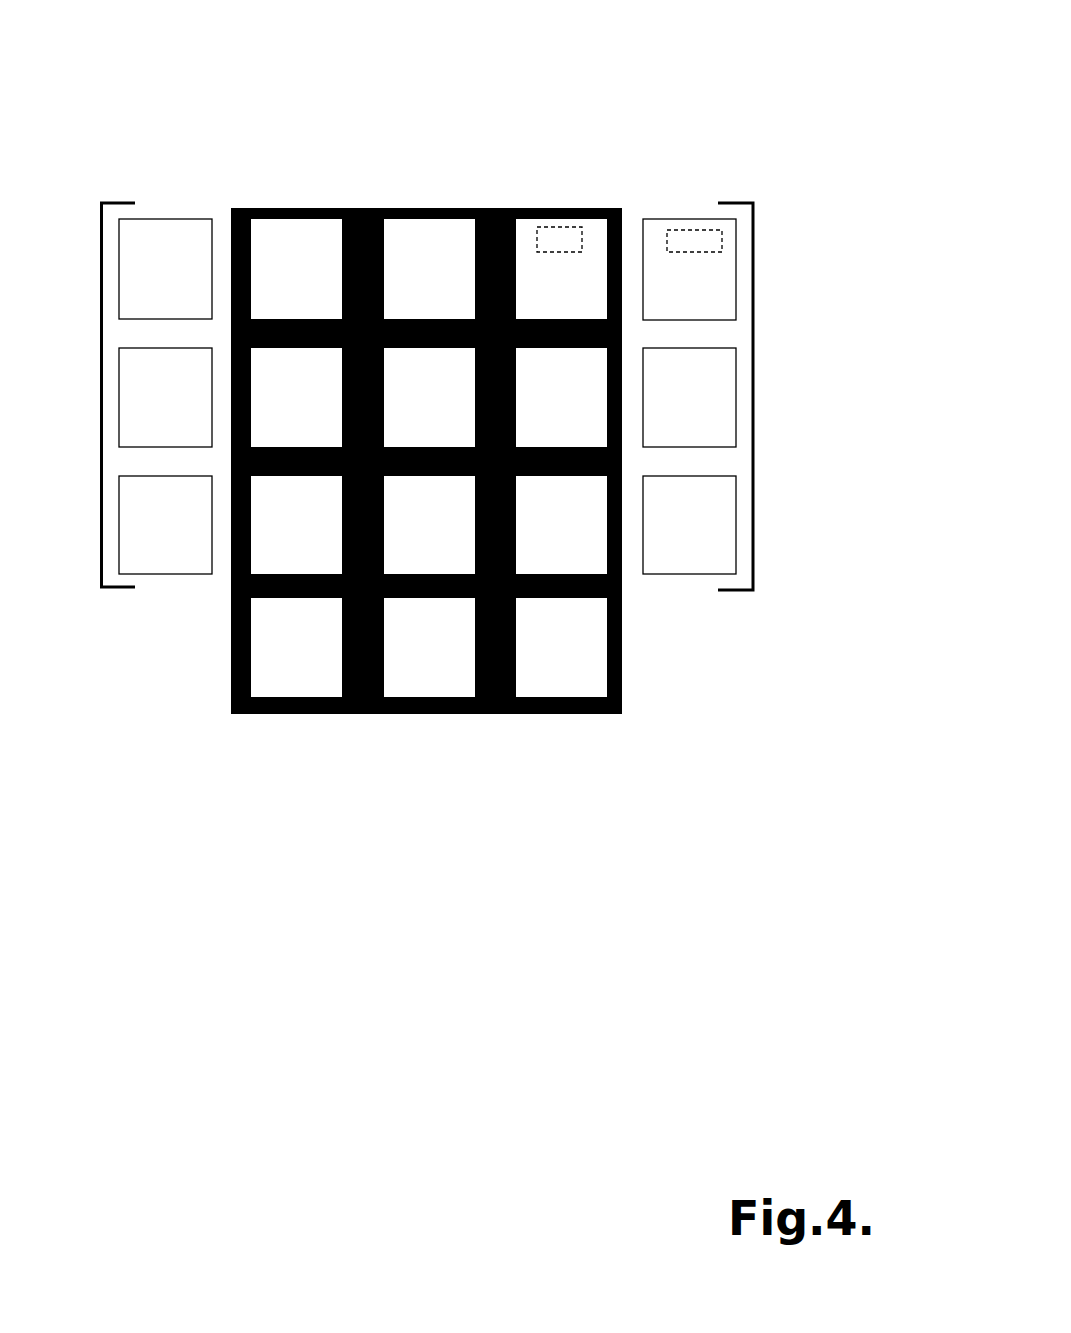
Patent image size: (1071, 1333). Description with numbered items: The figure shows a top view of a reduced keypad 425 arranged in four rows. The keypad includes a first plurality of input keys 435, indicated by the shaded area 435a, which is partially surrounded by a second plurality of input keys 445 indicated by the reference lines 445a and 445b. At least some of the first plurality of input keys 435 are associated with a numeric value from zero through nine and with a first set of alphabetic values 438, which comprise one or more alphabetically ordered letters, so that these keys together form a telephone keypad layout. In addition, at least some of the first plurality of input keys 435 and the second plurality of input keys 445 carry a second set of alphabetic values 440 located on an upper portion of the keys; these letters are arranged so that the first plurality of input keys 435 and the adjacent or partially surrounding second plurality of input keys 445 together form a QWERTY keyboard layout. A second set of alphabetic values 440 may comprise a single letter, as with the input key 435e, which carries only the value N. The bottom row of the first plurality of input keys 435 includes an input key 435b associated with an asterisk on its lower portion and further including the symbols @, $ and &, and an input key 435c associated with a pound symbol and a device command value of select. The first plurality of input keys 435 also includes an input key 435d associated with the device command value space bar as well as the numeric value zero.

The reduced keypad 425 is at (836, 29).
The first plurality of input keys 435 is at (427, 282).
The shaded area 435a is at (510, 713).
The input key 435b is at (270, 672).
The input key 435c is at (593, 662).
The input key 435d is at (418, 682).
The input key 435e is at (560, 537).
The first set of alphabetic values 438 is at (405, 297).
The second set of alphabetic values 440 is at (585, 248).
The second plurality of input keys 445 is at (143, 278).
The reference line 445a is at (118, 395).
The reference line 445b is at (753, 384).